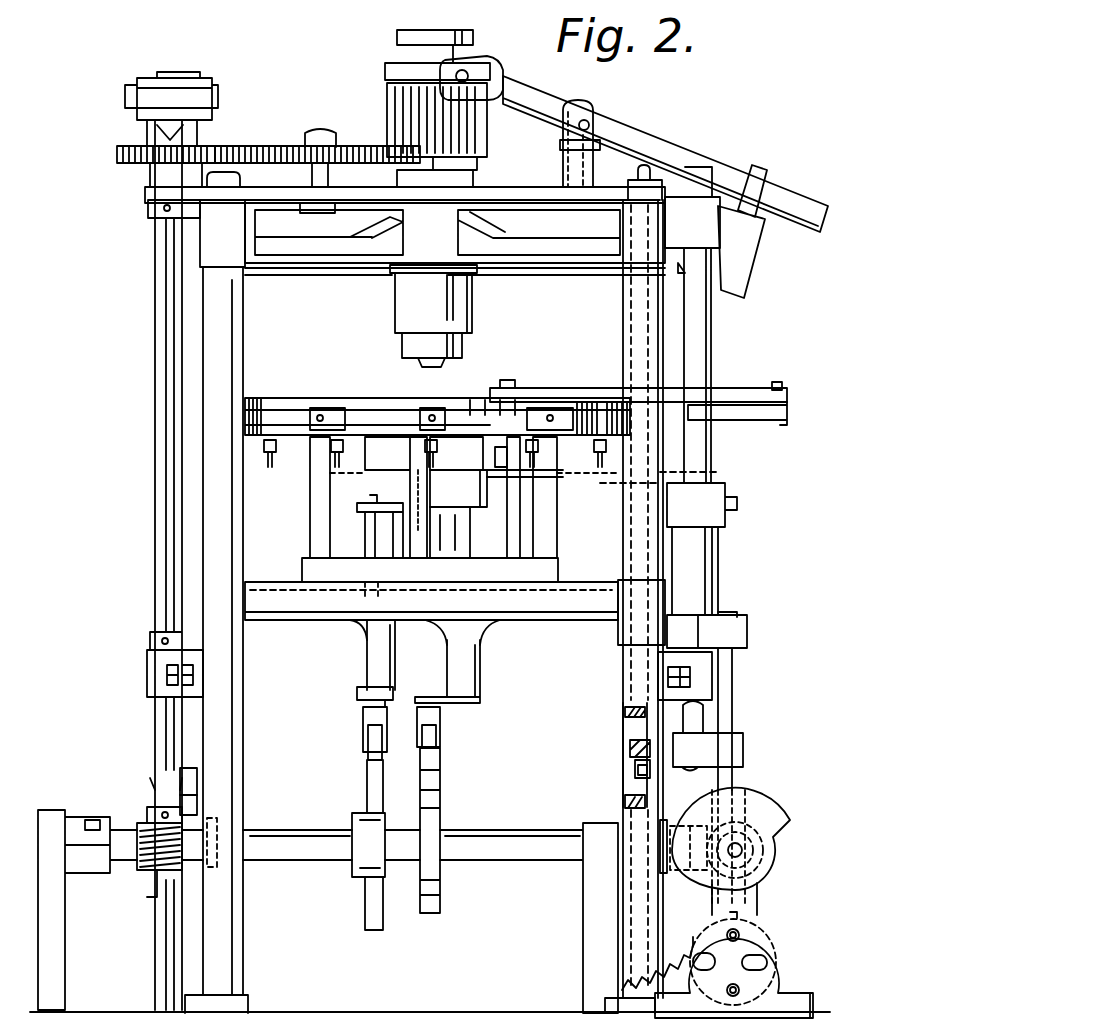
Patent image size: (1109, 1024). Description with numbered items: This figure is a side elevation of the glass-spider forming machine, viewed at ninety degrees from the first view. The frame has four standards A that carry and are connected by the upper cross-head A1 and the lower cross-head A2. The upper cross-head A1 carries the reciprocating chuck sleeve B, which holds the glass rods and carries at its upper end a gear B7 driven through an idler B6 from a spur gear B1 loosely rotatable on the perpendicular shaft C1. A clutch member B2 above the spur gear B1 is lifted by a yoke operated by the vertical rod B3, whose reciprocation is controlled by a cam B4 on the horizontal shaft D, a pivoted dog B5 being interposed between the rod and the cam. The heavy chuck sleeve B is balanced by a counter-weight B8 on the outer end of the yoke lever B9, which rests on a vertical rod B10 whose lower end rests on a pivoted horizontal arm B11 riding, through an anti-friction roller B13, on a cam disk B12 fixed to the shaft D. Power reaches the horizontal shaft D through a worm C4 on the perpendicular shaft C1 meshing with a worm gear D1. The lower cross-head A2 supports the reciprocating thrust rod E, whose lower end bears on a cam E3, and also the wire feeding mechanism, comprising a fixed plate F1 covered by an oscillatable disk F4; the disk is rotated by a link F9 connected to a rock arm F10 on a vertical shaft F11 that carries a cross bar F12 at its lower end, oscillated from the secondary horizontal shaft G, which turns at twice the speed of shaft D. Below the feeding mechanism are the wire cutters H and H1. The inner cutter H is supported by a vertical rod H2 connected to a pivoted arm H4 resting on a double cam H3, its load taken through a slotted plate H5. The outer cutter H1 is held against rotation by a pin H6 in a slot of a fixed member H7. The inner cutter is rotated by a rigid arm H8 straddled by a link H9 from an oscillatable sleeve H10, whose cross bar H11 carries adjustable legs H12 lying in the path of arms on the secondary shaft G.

The standard A is at (228, 336).
The upper cross-head A1 is at (455, 254).
The lower cross-head A2 is at (281, 582).
The reciprocating chuck sleeve B is at (463, 342).
The spur gear B1 is at (232, 140).
The clutch member B2 is at (168, 90).
The vertical rod B3 is at (182, 563).
The cam B4 is at (190, 812).
The pivoted dog B5 is at (197, 783).
The idler B6 is at (296, 135).
The gear B7 is at (392, 125).
The counter-weight B8 is at (748, 268).
The yoke lever B9 is at (646, 138).
The vertical rod B10 is at (634, 722).
The pivoted horizontal arm B11 is at (630, 748).
The cam disk B12 is at (635, 797).
The anti-friction roller B13 is at (635, 770).
The perpendicular shaft C1 is at (160, 471).
The worm C4 is at (150, 860).
The horizontal shaft D is at (522, 856).
The worm gear D1 is at (152, 796).
The reciprocating thrust rod E is at (447, 697).
The cam E3 is at (440, 806).
The fixed plate F1 is at (301, 446).
The disk F4 is at (343, 400).
The link F9 is at (572, 392).
The rock arm F10 is at (758, 420).
The vertical shaft F11 is at (703, 346).
The cross bar F12 is at (743, 750).
The secondary horizontal shaft G is at (745, 856).
The lower cutting member H is at (430, 553).
The upper cutting member H1 is at (460, 502).
The vertical rod H2 is at (370, 652).
The double cam H3 is at (368, 792).
The pivoted arm H4 is at (365, 734).
The horizontal projecting plate H5 is at (365, 512).
The pin H6 is at (510, 460).
The fixed member H7 is at (512, 530).
The rigid arm H8 is at (412, 490).
The link H9 is at (584, 477).
The oscillatable sleeve H10 is at (719, 576).
The oscillatable cross bar H11 is at (707, 631).
The adjustable legs H12 is at (726, 681).